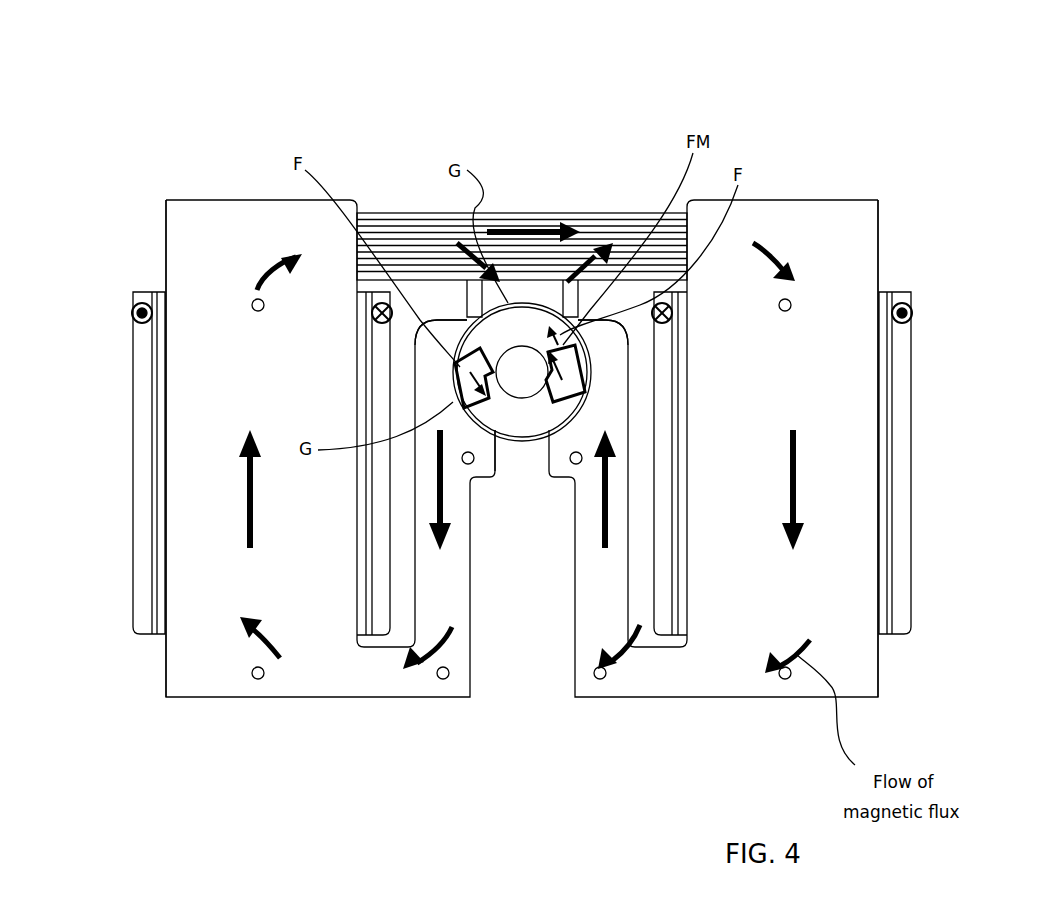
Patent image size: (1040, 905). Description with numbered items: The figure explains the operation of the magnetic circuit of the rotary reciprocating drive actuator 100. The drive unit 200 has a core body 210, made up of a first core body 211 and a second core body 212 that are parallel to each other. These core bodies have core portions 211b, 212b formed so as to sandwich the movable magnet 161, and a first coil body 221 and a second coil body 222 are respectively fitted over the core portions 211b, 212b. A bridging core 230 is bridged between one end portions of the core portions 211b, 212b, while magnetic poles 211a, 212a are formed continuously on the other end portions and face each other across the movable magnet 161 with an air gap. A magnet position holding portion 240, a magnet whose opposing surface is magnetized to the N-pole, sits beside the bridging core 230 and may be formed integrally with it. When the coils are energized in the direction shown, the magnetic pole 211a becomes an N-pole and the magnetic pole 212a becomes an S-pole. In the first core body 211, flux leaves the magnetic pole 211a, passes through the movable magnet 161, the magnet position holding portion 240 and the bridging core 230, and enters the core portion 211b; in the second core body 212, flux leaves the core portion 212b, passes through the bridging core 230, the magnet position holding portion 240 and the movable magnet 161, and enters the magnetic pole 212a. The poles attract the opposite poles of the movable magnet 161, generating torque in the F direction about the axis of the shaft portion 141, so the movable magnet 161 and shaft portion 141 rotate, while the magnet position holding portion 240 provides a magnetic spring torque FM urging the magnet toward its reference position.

The rotary reciprocating drive actuator 100 is at (546, 26).
The drive unit 200 is at (797, 105).
The core body 210 is at (670, 802).
The first core body 211 is at (665, 685).
The second core body 212 is at (392, 685).
The magnetic pole 211a is at (607, 362).
The magnetic pole 212a is at (425, 343).
The core portion 211b is at (850, 552).
The core portion 212b is at (195, 548).
The first coil body 221 is at (899, 470).
The second coil body 222 is at (145, 470).
The bridging core 230 is at (528, 213).
The magnet position holding portion 240 is at (483, 317).
The shaft portion 141 is at (527, 365).
The movable magnet 161 is at (493, 413).